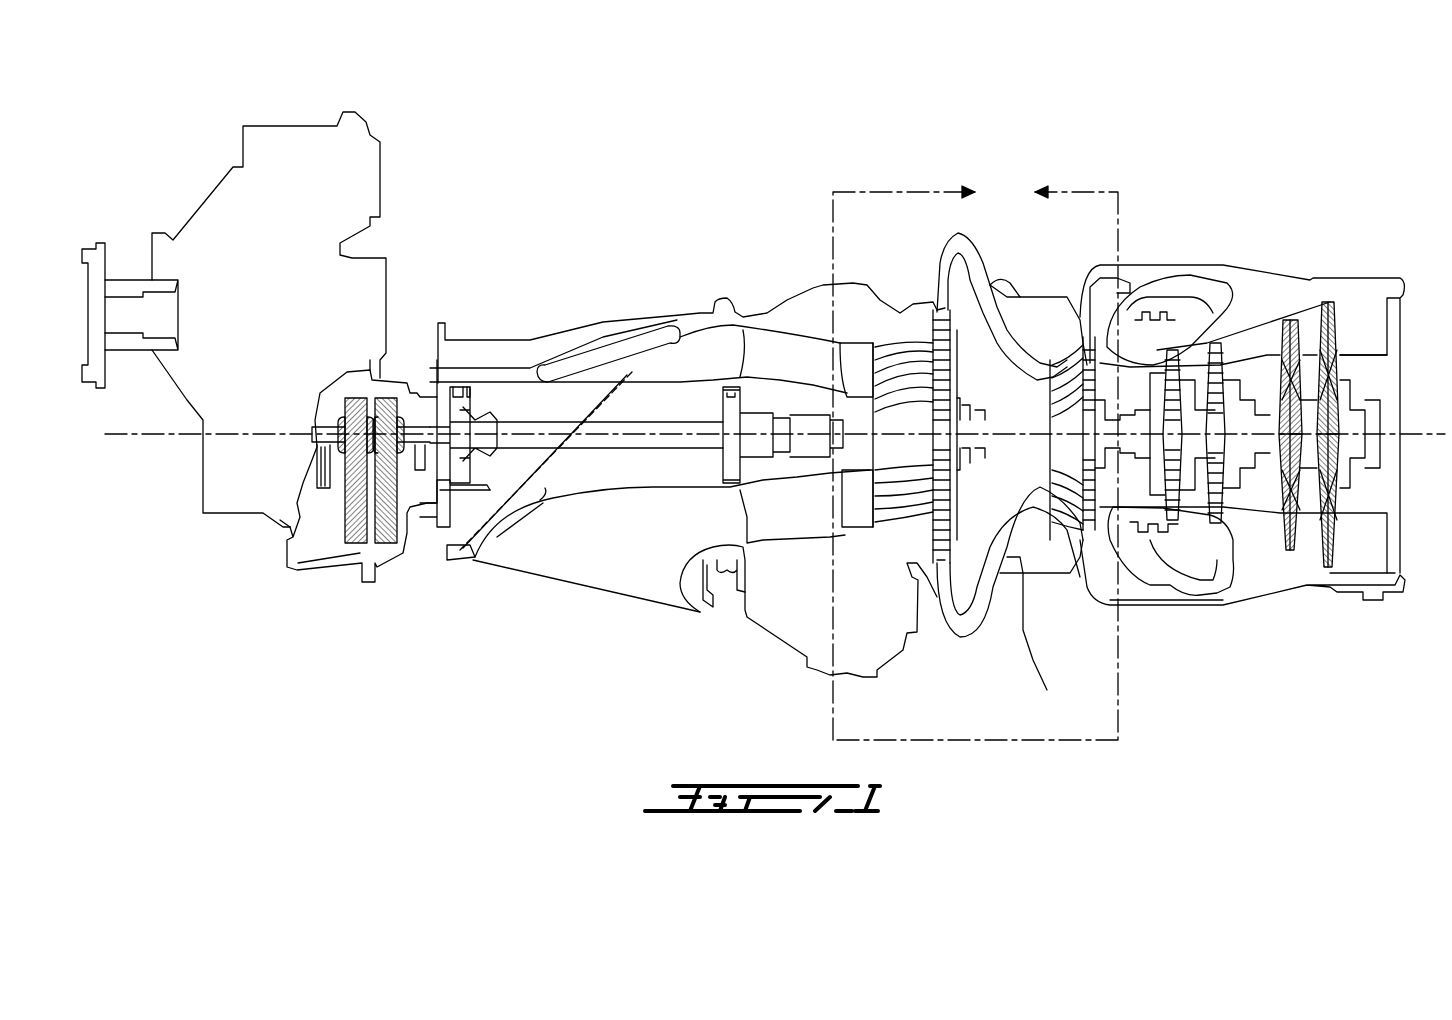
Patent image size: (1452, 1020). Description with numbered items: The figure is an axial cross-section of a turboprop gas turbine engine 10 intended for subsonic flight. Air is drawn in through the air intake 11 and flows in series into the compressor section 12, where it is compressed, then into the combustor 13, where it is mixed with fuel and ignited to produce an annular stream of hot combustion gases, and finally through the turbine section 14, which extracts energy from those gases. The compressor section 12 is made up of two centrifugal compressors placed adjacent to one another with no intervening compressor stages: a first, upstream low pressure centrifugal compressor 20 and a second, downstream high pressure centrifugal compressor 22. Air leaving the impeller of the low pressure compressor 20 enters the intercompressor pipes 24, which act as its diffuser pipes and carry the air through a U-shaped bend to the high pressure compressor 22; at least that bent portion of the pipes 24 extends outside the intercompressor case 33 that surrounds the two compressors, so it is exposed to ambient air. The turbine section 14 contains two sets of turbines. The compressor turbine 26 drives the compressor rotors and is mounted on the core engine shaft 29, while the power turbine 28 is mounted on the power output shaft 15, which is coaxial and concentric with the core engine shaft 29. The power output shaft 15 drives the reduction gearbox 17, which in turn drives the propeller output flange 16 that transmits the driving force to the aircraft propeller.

The gas turbine engine 10 is at (657, 195).
The air intake 11 is at (607, 557).
The compressor section 12 is at (1087, 681).
The combustor 13 is at (1200, 300).
The turbine section 14 is at (1162, 513).
The power output shaft 15 is at (640, 432).
The propeller output flange 16 is at (125, 257).
The reduction gearbox 17 is at (388, 596).
The low pressure centrifugal compressor 20 is at (903, 343).
The high pressure centrifugal compressor 22 is at (1068, 355).
The intercompressor pipes 24 is at (960, 232).
The compressor turbine 26 is at (1222, 343).
The power turbine 28 is at (1332, 300).
The core engine shaft 29 is at (1140, 325).
The intercompressor case 33 is at (1047, 690).